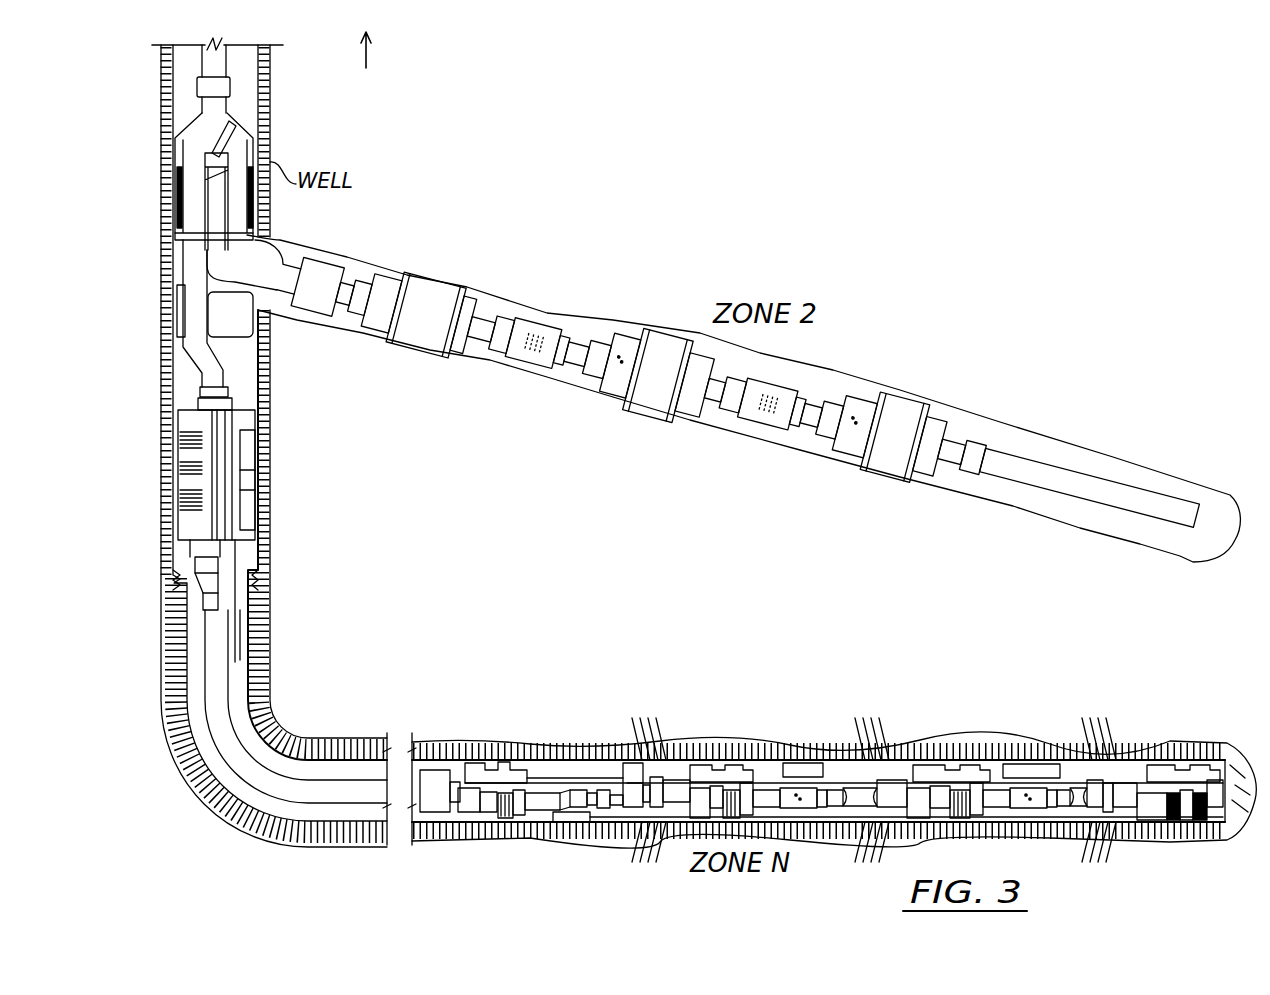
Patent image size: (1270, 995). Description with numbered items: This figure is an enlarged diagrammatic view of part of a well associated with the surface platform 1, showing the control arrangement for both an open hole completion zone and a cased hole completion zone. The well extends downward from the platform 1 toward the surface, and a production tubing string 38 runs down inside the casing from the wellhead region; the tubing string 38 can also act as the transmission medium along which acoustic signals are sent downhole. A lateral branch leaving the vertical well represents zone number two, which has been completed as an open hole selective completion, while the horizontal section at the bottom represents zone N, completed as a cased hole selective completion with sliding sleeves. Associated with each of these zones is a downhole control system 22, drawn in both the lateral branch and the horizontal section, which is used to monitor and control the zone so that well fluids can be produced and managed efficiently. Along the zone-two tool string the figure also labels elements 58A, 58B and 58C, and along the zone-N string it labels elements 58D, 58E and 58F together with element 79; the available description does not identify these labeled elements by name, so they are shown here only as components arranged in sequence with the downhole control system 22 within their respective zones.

The platform 1 is at (370, 78).
The production tubing string 38 is at (270, 120).
The downhole control system 22 is at (322, 270).
The first downhole tool (zone 2) 58A is at (484, 300).
The second downhole tool (zone 2) 58B is at (720, 378).
The third downhole tool (zone 2) 58C is at (967, 423).
The downhole tool (zone N) 58D is at (570, 823).
The downhole tool (zone N) 58E is at (812, 743).
The downhole tool (zone N) 58F is at (1040, 745).
The packer / liner hanger 79 is at (767, 763).